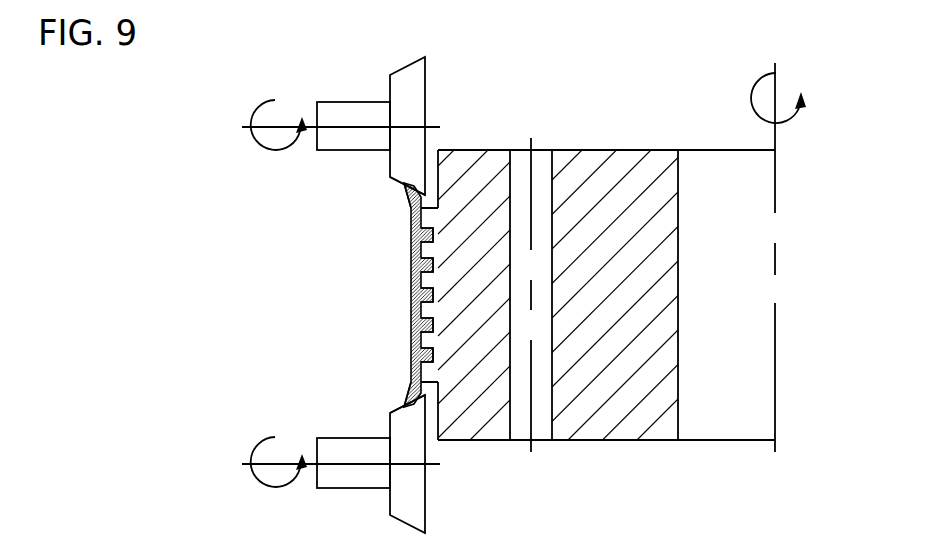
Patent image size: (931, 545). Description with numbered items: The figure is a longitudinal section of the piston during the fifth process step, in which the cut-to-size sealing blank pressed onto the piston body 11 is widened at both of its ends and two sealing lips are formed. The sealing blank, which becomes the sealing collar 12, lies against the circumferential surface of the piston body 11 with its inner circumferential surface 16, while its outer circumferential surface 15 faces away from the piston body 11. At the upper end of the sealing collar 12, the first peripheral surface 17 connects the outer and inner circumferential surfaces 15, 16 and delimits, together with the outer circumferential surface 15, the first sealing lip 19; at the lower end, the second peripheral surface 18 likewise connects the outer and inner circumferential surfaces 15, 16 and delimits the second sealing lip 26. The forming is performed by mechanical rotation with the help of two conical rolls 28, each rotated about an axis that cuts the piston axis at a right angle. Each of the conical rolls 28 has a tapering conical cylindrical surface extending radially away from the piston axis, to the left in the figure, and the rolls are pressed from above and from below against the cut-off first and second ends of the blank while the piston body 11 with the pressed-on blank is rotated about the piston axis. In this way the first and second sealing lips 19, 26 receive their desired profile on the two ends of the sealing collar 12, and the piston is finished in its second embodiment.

The piston body 11 is at (604, 142).
The sealing collar 12 is at (397, 268).
The outer circumferential surface 15 is at (410, 319).
The inner circumferential surface 16 is at (422, 198).
The first peripheral surface 17 is at (401, 181).
The second peripheral surface 18 is at (392, 413).
The first sealing lip 19 is at (407, 203).
The second sealing lip 26 is at (408, 401).
The conical rolls 28 is at (380, 70).